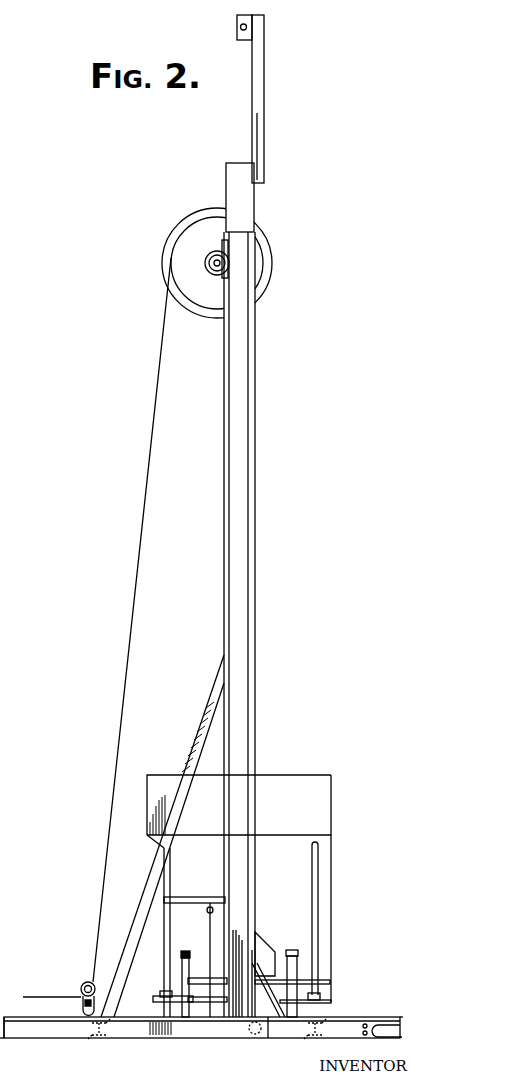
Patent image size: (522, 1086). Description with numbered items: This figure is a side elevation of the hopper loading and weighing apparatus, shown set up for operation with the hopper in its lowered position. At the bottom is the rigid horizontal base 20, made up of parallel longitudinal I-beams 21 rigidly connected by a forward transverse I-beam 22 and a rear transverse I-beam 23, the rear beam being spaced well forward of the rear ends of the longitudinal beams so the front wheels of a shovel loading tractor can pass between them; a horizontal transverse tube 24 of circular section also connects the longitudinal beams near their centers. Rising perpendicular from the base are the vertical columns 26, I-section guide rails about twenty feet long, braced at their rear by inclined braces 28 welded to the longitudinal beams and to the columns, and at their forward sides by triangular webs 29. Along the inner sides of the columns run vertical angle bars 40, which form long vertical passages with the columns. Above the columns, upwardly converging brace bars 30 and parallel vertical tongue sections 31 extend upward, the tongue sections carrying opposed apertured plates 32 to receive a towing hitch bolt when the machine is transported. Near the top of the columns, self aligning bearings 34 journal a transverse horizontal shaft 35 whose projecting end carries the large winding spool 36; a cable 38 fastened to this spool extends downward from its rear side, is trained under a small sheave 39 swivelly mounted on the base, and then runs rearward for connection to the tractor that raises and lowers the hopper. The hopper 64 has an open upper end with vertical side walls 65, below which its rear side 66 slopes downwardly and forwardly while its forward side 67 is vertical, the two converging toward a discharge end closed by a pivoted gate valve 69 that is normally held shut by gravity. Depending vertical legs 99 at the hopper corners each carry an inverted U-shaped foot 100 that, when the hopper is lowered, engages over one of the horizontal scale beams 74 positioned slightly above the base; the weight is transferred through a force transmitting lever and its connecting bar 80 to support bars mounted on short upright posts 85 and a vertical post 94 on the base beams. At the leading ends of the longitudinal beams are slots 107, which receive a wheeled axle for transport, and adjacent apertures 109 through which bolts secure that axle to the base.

The horizontal base 20 is at (113, 1041).
The longitudinal I-beams 21 is at (13, 1032).
The forward transverse I-beam 22 is at (327, 1033).
The rear transverse I-beam 23 is at (85, 1040).
The horizontal transverse tube 24 is at (245, 1038).
The vertical columns 26 is at (248, 537).
The inclined braces 28 is at (153, 878).
The triangular webs 29 is at (268, 1017).
The converging brace bars 30 is at (228, 174).
The tongue sections 31 is at (265, 105).
The apertured plates 32 is at (237, 28).
The self aligning bearings 34 is at (207, 262).
The transverse horizontal shaft 35 is at (213, 267).
The large winding spool 36 is at (193, 225).
The cable 38 is at (125, 653).
The small sheave 39 is at (86, 981).
The vertical angle bars 40 is at (256, 635).
The hopper 64 is at (270, 777).
The vertical side walls 65 is at (332, 803).
The rear side of hopper 66 is at (222, 901).
The forward side of hopper 67 is at (332, 902).
The gate valve 69 is at (328, 993).
The scale beams 74 is at (153, 1000).
The connecting bar 80 is at (279, 965).
The upright posts 85 is at (182, 967).
The vertical post 94 is at (302, 948).
The depending vertical legs 99 is at (163, 908).
The inverted U-shaped foot 100 is at (165, 994).
The slots 107 is at (398, 1016).
The apertures 109 is at (366, 1024).